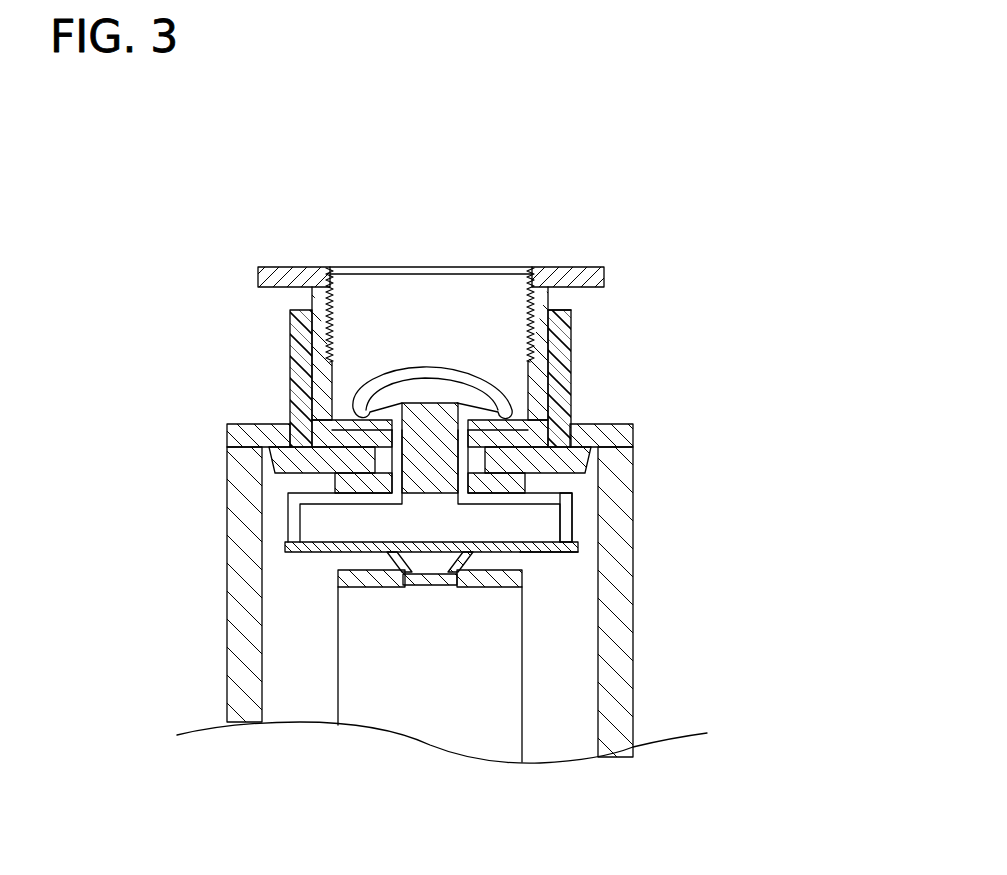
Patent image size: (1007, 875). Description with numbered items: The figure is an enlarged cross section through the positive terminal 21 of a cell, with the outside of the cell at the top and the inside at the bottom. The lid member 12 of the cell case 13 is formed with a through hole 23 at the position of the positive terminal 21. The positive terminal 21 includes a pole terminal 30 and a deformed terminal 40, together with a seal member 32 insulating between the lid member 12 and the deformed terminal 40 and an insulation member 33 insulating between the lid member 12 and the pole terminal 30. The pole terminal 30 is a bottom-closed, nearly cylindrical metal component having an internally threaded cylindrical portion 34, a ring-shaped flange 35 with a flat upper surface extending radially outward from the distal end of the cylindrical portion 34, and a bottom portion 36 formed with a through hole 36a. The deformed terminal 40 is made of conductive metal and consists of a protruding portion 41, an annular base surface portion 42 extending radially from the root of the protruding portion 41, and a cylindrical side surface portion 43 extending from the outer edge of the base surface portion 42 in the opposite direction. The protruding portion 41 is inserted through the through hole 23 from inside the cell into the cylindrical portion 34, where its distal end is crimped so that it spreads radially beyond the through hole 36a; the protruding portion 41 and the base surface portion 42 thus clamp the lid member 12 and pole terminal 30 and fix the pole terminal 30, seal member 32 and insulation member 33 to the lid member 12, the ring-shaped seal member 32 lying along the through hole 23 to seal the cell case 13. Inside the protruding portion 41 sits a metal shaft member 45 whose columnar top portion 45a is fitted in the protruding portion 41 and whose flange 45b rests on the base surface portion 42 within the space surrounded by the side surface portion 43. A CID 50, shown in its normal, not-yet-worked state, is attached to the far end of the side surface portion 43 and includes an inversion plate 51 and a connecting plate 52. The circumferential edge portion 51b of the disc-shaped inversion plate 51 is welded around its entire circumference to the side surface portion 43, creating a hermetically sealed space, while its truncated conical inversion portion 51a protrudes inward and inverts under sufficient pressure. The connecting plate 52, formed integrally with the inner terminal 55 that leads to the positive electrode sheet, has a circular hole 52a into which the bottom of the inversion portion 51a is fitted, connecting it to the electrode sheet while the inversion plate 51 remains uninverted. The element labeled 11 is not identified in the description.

The positive terminal 21 is at (623, 229).
The pole terminal 30 is at (452, 290).
The flange 35 is at (269, 267).
The cylindrical portion 34 is at (312, 298).
The insulation member 33 is at (290, 343).
The bottom portion 36 is at (548, 395).
The through hole 36a is at (572, 367).
The deformed terminal 40 is at (400, 369).
The protruding portion 41 is at (446, 369).
The side surface portion 43 is at (456, 470).
The base surface portion 42 is at (566, 493).
The seal member 32 is at (262, 432).
The cell case 13 is at (745, 393).
The lid member 12 is at (607, 430).
The inner step of housing 11 is at (600, 480).
The through hole 23 is at (475, 583).
The shaft member 45 is at (134, 472).
The top portion 45a is at (290, 502).
The flange 45b is at (385, 507).
The CID 50 is at (158, 575).
The inversion plate 51 is at (335, 553).
The inversion portion 51a is at (410, 586).
The circumferential edge portion 51b is at (557, 553).
The connecting plate 52 is at (340, 567).
The circular hole 52a is at (453, 586).
The inner terminal 55 is at (427, 723).